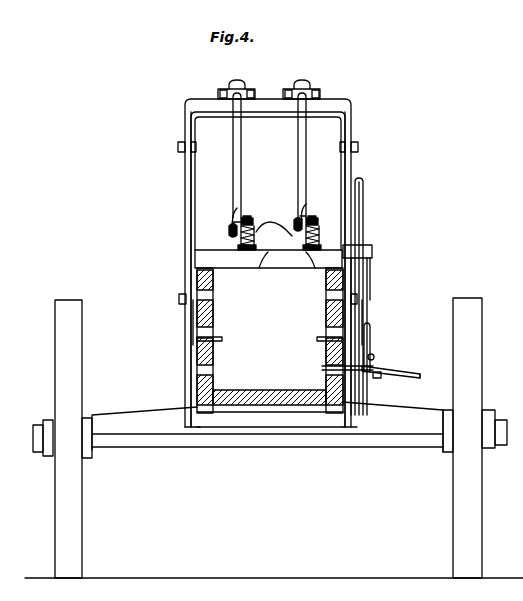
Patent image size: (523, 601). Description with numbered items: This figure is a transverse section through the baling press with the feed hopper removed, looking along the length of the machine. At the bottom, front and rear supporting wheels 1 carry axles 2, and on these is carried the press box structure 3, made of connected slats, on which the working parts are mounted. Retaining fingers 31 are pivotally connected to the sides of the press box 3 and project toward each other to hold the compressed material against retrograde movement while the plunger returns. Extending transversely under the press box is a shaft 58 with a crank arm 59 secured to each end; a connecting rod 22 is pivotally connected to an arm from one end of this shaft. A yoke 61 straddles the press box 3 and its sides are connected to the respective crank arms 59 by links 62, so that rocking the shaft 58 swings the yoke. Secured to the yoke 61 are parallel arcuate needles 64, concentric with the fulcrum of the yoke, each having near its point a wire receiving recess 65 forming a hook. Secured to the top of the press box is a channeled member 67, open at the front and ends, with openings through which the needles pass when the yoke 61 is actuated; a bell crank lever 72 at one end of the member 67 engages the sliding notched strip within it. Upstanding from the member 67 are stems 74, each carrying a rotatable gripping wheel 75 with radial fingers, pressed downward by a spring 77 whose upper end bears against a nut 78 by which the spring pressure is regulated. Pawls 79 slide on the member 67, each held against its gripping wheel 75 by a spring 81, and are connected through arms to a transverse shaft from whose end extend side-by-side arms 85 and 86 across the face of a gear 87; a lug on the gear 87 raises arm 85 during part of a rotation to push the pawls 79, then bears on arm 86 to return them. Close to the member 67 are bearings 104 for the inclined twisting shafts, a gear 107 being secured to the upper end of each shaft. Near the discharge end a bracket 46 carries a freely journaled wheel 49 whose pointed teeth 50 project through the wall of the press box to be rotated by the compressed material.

The supporting wheels 1 is at (62, 380).
The axles 2 is at (38, 439).
The press box structure 3 is at (213, 397).
The connecting rod 22 is at (370, 346).
The retaining fingers 31 is at (213, 340).
The bracket 46 is at (379, 377).
The wheel 49 is at (381, 369).
The pointed teeth 50 is at (431, 381).
The shaft 58 is at (282, 420).
The crank arm 59 is at (197, 338).
The yoke 61 is at (338, 99).
The links 62 is at (187, 201).
The arcuate needles 64 is at (298, 160).
The wire receiving recess 65 is at (256, 246).
The channeled member 67 is at (283, 256).
The bell crank lever 72 is at (368, 253).
The stems 74 is at (241, 224).
The gripping wheel 75 is at (238, 251).
The springs 77 is at (298, 238).
The nut 78 is at (245, 218).
The pawls 79 is at (259, 258).
The spring 81 is at (336, 249).
The arm 85 is at (362, 272).
The arm 86 is at (368, 286).
The gear 87 is at (365, 301).
The bearings 104 is at (197, 253).
The gear 107 is at (232, 224).